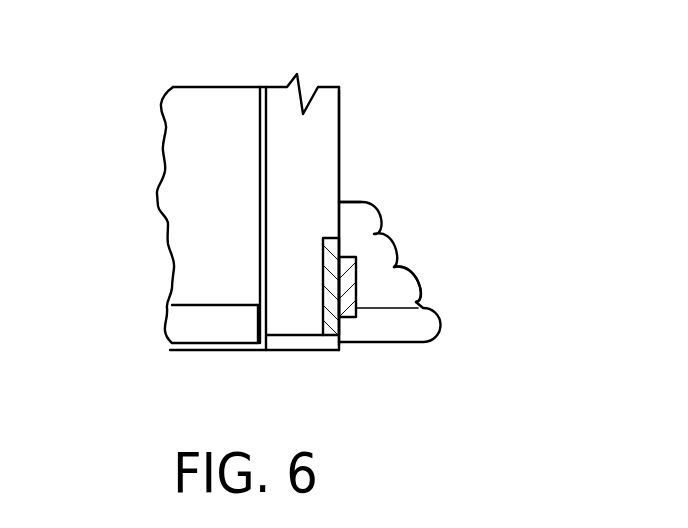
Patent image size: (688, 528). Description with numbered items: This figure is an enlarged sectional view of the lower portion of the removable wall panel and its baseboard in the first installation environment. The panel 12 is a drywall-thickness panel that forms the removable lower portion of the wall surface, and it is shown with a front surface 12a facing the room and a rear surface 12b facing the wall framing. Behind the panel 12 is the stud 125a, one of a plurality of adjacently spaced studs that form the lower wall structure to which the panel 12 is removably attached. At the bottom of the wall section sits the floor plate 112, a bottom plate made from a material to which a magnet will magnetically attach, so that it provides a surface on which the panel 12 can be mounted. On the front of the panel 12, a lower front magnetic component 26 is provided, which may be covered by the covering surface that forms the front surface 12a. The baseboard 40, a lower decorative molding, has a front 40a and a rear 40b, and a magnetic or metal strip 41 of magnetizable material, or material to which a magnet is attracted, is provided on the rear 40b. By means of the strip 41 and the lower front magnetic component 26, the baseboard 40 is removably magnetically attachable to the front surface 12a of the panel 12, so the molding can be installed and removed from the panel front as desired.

The panel 12 is at (343, 139).
The front surface 12a is at (339, 172).
The rear surface 12b is at (263, 160).
The lower front magnetic component 26 is at (322, 312).
The baseboard 40 is at (400, 243).
The front of baseboard 40a is at (420, 282).
The rear of baseboard 40b is at (339, 213).
The magnetic or metal strip 41 is at (418, 308).
The floor plate 112 is at (172, 305).
The stud 125a is at (220, 218).